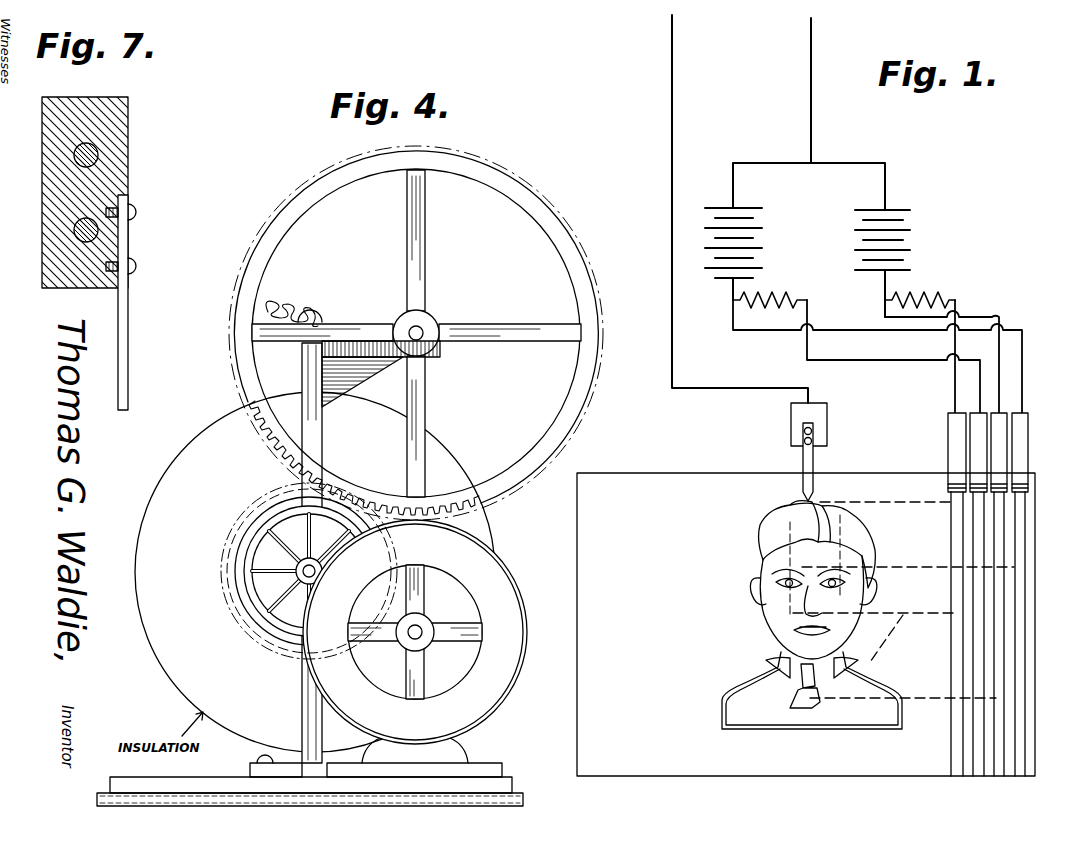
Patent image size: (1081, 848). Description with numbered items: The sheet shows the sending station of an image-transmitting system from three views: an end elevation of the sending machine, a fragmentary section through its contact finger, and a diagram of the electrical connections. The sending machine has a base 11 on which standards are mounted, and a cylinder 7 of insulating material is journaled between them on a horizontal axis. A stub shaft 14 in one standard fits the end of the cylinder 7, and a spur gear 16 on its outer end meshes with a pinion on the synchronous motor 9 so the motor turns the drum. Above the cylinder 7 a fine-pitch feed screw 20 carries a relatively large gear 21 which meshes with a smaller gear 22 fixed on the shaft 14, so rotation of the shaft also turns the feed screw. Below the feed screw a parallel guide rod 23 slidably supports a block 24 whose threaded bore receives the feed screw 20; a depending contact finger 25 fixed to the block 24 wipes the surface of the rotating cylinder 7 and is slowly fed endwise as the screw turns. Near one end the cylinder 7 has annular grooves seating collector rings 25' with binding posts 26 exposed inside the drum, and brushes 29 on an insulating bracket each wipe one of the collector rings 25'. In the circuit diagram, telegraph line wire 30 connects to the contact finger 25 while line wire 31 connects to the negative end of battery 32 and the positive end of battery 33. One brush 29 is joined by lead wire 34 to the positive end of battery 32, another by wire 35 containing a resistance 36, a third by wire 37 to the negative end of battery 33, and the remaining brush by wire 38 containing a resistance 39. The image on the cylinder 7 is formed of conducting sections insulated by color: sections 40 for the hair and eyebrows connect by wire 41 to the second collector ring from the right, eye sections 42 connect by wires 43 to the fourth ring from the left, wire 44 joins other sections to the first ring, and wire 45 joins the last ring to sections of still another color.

In FIG. 4, the cylinder 7 is at (166, 478).
In FIG. 1, the cylinder 7 is at (806, 624).
In FIG. 4, the synchronous motor 9 is at (415, 641).
In FIG. 4, the base 11 is at (193, 790).
In FIG. 4, the stub shaft 14 is at (322, 586).
In FIG. 4, the spur gear 16 is at (243, 618).
In FIG. 7, the feed screw 20 is at (98, 154).
In FIG. 4, the gear 21 is at (583, 392).
In FIG. 4, the gear 22 is at (246, 545).
In FIG. 7, the guide rod 23 is at (78, 240).
In FIG. 7, the block 24 is at (56, 238).
In FIG. 1, the block 24 is at (828, 411).
In FIG. 7, the contact finger 25 is at (137, 302).
In FIG. 1, the collector rings 25' is at (1046, 524).
In FIG. 1, the binding posts 26 is at (802, 494).
In FIG. 4, the brushes 29 is at (394, 406).
In FIG. 1, the brushes 29 is at (1029, 456).
In FIG. 1, the telegraph line wire 30 is at (673, 82).
In FIG. 1, the telegraph line wire 31 is at (812, 78).
In FIG. 1, the battery 32 is at (760, 243).
In FIG. 1, the battery 33 is at (905, 222).
In FIG. 1, the lead wire 34 is at (1023, 380).
In FIG. 1, the wire 35 is at (920, 362).
In FIG. 1, the resistance 36 is at (786, 300).
In FIG. 1, the wire 37 is at (988, 310).
In FIG. 1, the wire 38 is at (948, 414).
In FIG. 1, the resistance 39 is at (922, 297).
In FIG. 1, the image sections 40 is at (762, 544).
In FIG. 1, the wire 41 is at (895, 510).
In FIG. 1, the image sections 42 is at (782, 592).
In FIG. 1, the wires 43 is at (906, 572).
In FIG. 1, the wire 44 is at (922, 618).
In FIG. 1, the wire 45 is at (920, 703).